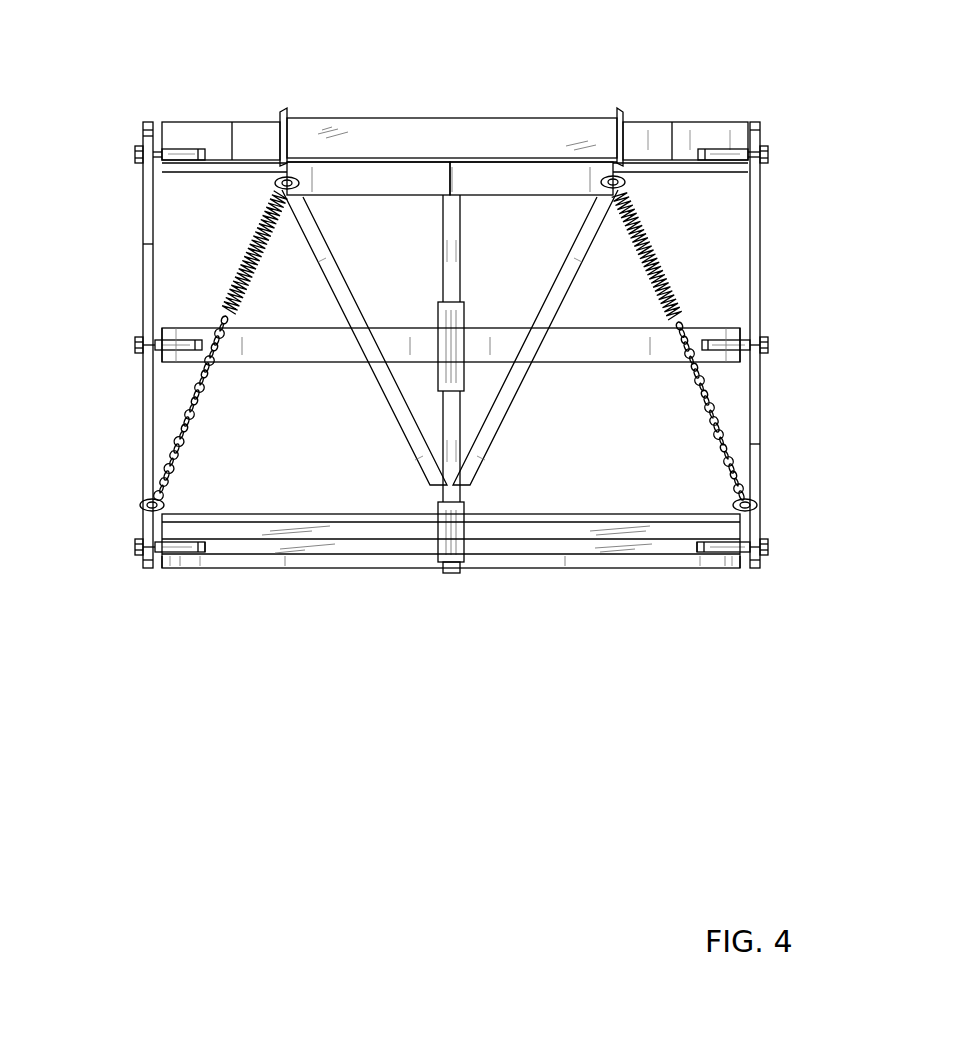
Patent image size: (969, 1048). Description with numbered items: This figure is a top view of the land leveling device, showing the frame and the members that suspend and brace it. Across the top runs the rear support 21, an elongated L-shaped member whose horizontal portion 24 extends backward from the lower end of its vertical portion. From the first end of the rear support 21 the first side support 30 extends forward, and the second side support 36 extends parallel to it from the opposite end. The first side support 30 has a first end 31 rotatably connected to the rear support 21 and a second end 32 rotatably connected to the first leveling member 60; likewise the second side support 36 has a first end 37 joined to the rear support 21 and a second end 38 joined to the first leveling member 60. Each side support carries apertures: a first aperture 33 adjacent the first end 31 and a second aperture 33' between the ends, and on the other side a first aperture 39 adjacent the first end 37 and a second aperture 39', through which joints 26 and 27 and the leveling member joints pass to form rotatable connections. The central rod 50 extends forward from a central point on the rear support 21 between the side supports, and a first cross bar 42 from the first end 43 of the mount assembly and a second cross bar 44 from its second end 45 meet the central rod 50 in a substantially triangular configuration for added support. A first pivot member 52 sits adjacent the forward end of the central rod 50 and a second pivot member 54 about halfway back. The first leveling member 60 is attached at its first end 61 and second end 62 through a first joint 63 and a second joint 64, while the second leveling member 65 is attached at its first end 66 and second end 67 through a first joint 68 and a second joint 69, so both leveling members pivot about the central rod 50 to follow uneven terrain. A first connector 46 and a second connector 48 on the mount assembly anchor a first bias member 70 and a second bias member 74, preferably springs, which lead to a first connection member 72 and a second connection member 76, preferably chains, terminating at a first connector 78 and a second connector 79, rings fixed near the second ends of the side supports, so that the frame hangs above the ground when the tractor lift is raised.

The rear support 21 is at (245, 120).
The horizontal portion 24 is at (455, 140).
The joint 26 is at (143, 130).
The joint 27 is at (765, 150).
The first side support 30 is at (143, 240).
The first end 31 is at (146, 122).
The second end 32 is at (145, 570).
The first aperture 33 is at (133, 174).
The second aperture 33' is at (130, 360).
The second side support 36 is at (765, 260).
The first end 37 is at (753, 122).
The second end 38 is at (752, 570).
The first aperture 39 is at (768, 174).
The second aperture 39' is at (774, 363).
The first cross bar 42 is at (405, 452).
The first end 43 is at (322, 198).
The second cross bar 44 is at (492, 452).
The second end 45 is at (585, 198).
The first connector 46 is at (275, 183).
The second connector 48 is at (625, 182).
The central rod 50 is at (443, 230).
The first pivot member 52 is at (465, 302).
The second pivot member 54 is at (458, 565).
The first leveling member 60 is at (310, 570).
The first end 61 is at (165, 570).
The second end 62 is at (735, 568).
The first joint 63 is at (205, 568).
The second joint 64 is at (700, 568).
The second leveling member 65 is at (630, 366).
The first end 66 is at (172, 328).
The second end 67 is at (738, 330).
The first joint 68 is at (203, 367).
The second joint 69 is at (755, 352).
The first bias member 70 is at (245, 246).
The first connection member 72 is at (185, 472).
The second bias member 74 is at (668, 262).
The second connection member 76 is at (730, 476).
The first connector 78 is at (140, 505).
The second connector 79 is at (760, 498).